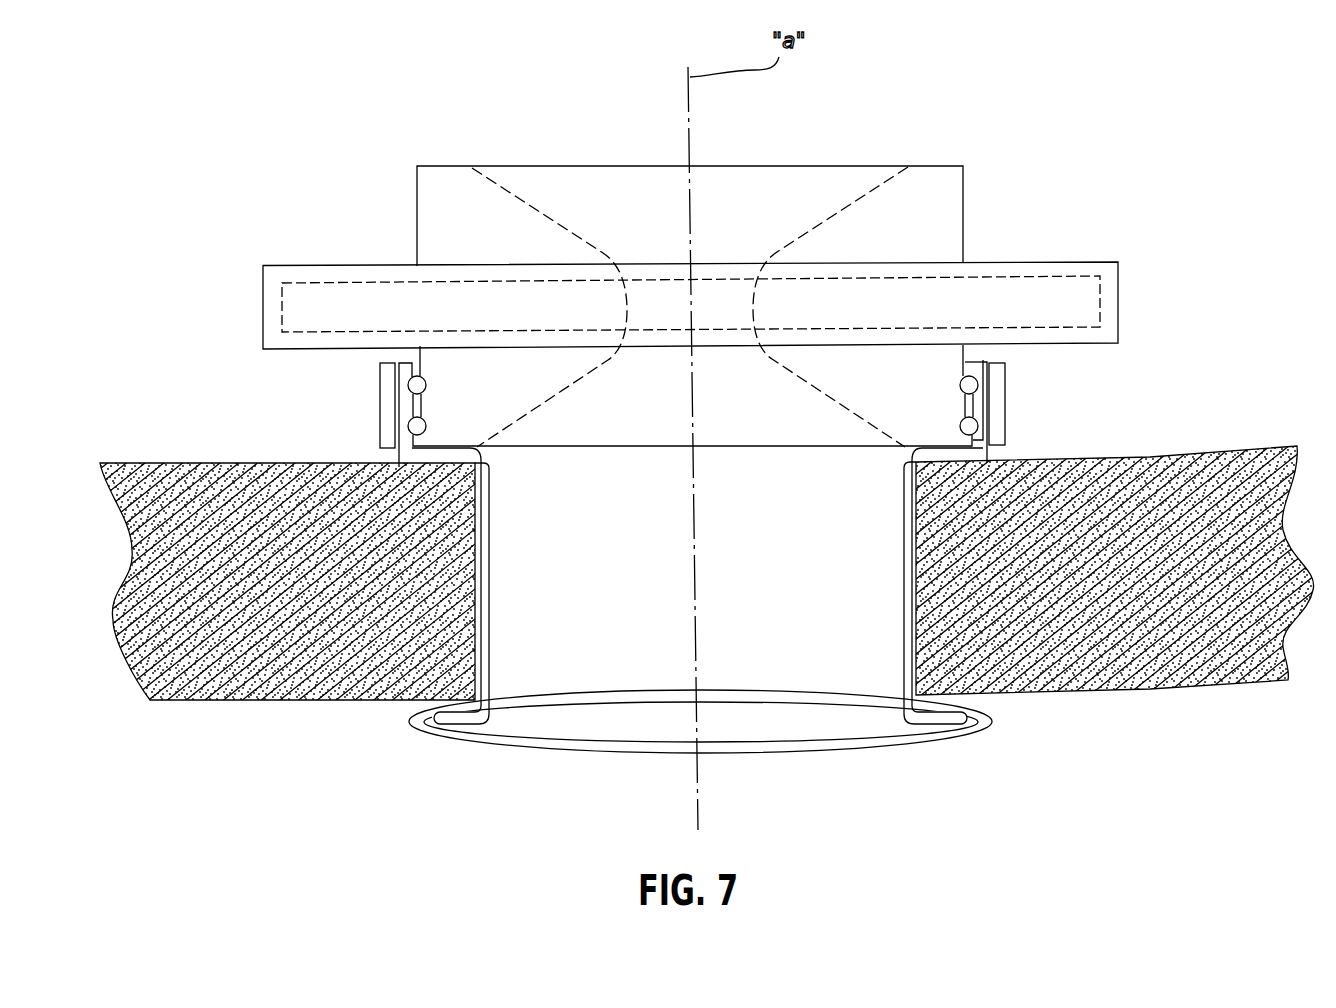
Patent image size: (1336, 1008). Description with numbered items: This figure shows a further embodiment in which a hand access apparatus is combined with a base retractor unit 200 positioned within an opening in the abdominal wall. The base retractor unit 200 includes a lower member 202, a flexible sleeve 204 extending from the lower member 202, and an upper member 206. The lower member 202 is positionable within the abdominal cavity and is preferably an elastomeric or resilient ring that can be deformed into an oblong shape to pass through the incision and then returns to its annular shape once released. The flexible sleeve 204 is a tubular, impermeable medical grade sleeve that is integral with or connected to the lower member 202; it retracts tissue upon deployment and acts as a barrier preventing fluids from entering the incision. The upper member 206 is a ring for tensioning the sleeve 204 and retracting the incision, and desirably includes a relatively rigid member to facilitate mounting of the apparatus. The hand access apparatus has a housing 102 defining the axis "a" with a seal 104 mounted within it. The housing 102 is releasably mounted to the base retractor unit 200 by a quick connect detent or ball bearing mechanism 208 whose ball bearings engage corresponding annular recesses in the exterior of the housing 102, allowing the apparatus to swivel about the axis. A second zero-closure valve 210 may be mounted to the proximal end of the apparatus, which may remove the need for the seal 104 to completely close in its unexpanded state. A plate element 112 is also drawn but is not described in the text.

The housing 102 is at (997, 383).
The seal 104 is at (838, 211).
The plate 112 is at (1047, 295).
The base retractor unit 200 is at (479, 581).
The lower member 202 is at (418, 722).
The flexible sleeve 204 is at (910, 618).
The upper member 206 is at (975, 454).
The quick connect detent or ball bearing mechanism 208 is at (394, 371).
The second zero-closure valve 210 is at (566, 166).